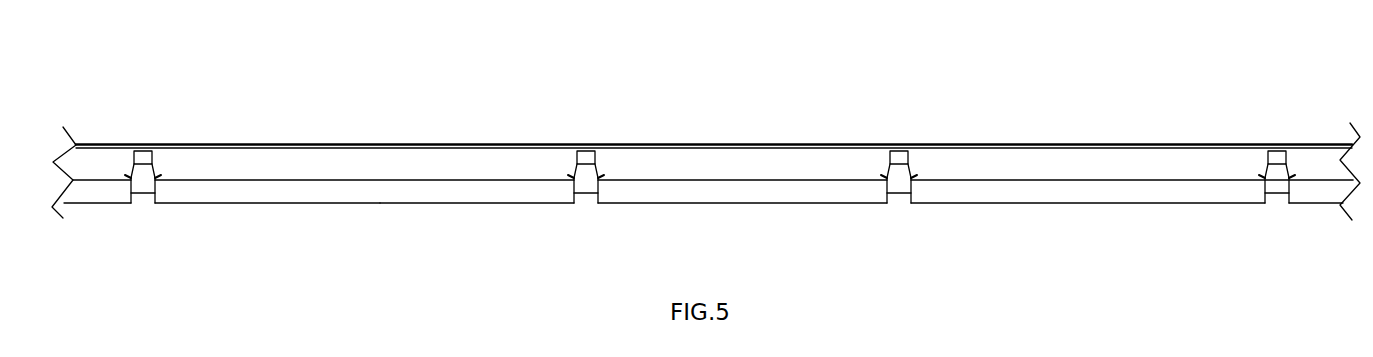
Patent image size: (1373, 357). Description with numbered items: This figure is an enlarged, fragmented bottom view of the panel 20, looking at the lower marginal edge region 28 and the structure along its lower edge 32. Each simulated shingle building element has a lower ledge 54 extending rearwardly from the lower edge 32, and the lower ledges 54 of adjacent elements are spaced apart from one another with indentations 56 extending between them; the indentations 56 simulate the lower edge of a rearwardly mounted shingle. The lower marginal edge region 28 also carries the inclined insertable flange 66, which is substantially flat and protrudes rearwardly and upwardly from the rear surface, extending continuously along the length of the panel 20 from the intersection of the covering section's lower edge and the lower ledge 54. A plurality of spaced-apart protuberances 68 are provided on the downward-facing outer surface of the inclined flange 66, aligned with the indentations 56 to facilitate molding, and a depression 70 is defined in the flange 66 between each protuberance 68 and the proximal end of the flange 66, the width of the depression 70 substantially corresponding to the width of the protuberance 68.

The panel 20 is at (709, 83).
The lower marginal edge region 28 is at (758, 168).
The lower edge 32 is at (440, 205).
The lower ledge 54 is at (303, 197).
The indentation 56 is at (139, 200).
The inclined insertable flange 66 is at (97, 166).
The protuberance 68 is at (146, 159).
The depression 70 is at (142, 173).